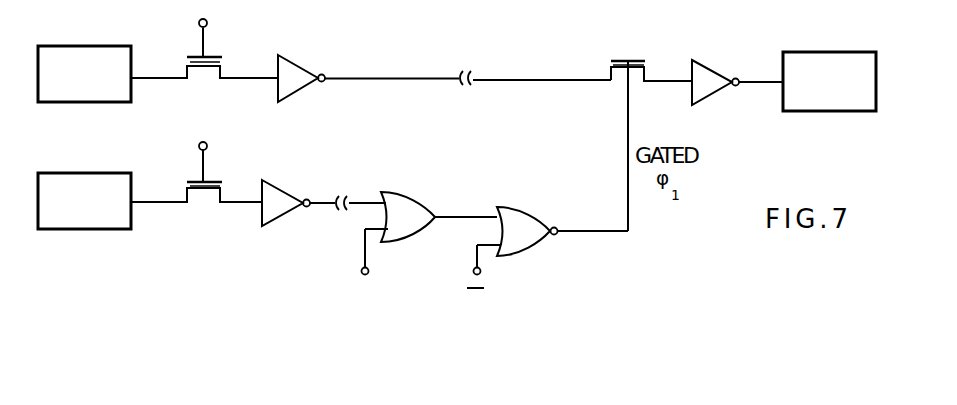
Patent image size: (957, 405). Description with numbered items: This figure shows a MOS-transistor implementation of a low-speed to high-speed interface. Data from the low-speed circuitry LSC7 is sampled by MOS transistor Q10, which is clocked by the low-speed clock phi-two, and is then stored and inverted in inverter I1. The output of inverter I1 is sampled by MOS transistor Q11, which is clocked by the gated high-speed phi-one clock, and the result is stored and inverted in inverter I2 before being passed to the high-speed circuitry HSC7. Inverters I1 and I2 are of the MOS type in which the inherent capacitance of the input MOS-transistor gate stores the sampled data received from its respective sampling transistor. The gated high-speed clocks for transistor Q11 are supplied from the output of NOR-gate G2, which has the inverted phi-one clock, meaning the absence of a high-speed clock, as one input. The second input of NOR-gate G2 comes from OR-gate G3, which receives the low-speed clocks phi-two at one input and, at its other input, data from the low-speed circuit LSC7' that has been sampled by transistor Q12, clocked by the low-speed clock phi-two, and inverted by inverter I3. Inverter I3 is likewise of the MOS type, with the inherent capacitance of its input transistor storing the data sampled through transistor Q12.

The MOS transistor Q10 is at (204, 41).
The MOS transistor Q11 is at (639, 146).
The transistor Q12 is at (196, 188).
The inverter I1 is at (302, 94).
The inverter I2 is at (737, 99).
The inverter I3 is at (286, 224).
The NOR-gate G2 is at (547, 255).
The OR-gate G3 is at (427, 240).
The low-speed circuitry LSC7 is at (84, 74).
The high-speed circuitry HSC7 is at (829, 81).
The low-speed circuit LSC7' is at (84, 201).